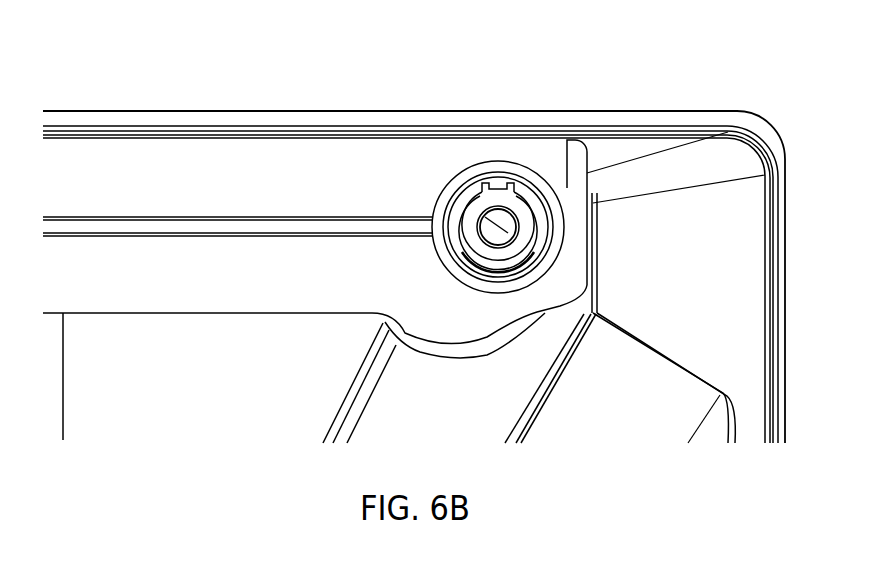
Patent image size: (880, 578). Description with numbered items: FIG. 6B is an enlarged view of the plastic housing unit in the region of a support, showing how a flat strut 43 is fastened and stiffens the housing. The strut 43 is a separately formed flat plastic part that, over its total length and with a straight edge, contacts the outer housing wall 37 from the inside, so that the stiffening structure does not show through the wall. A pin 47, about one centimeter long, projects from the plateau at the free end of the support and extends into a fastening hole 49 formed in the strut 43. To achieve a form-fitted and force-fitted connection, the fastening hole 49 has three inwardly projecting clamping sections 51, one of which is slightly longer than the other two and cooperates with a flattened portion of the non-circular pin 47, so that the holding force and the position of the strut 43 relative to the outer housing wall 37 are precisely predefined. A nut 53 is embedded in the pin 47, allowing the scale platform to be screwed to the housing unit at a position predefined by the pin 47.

The outer housing wall 37 is at (315, 111).
The strut 43 is at (205, 165).
The pin 47 is at (527, 218).
The fastening hole 49 is at (545, 207).
The clamping section 51 is at (500, 183).
The nut 53 is at (486, 214).